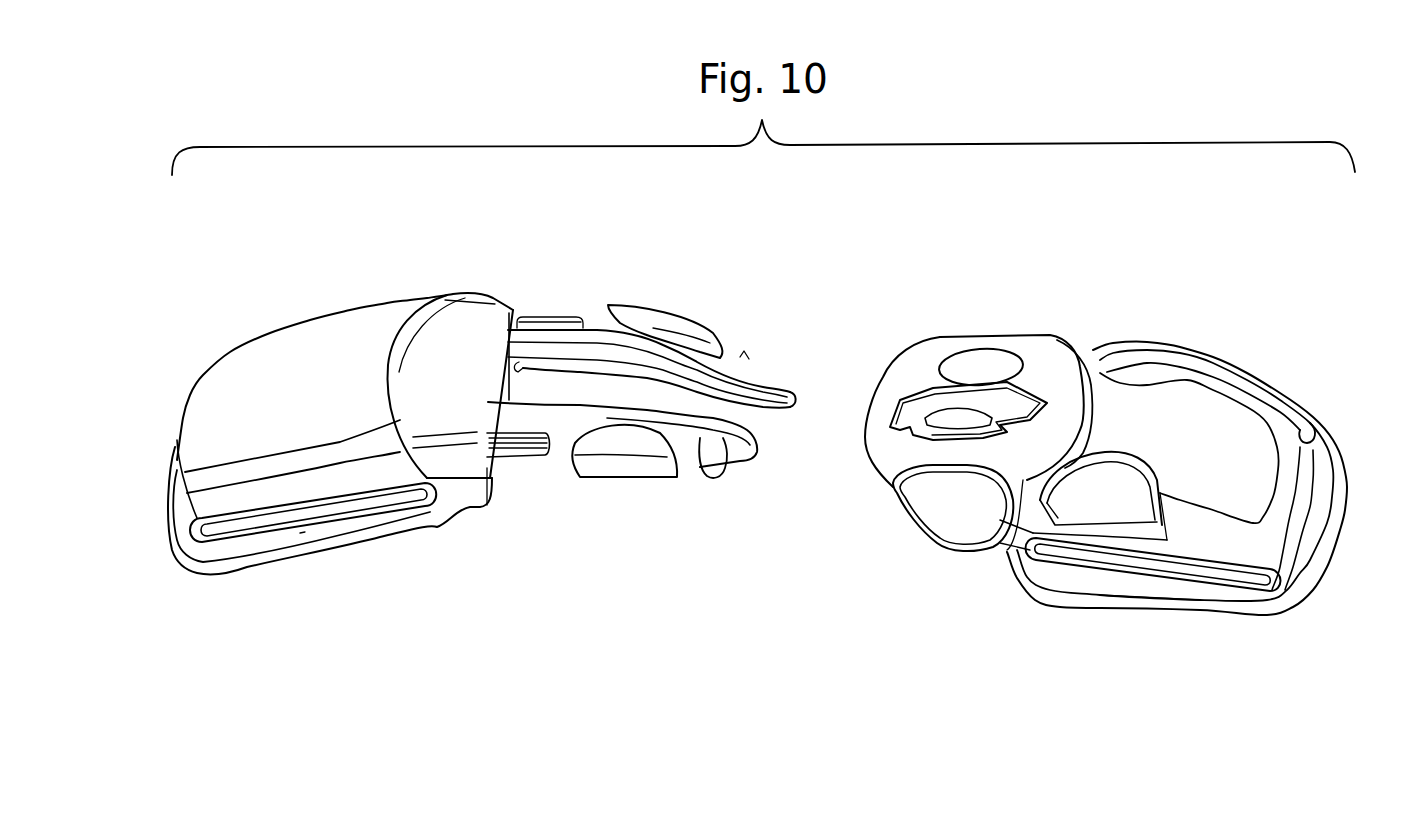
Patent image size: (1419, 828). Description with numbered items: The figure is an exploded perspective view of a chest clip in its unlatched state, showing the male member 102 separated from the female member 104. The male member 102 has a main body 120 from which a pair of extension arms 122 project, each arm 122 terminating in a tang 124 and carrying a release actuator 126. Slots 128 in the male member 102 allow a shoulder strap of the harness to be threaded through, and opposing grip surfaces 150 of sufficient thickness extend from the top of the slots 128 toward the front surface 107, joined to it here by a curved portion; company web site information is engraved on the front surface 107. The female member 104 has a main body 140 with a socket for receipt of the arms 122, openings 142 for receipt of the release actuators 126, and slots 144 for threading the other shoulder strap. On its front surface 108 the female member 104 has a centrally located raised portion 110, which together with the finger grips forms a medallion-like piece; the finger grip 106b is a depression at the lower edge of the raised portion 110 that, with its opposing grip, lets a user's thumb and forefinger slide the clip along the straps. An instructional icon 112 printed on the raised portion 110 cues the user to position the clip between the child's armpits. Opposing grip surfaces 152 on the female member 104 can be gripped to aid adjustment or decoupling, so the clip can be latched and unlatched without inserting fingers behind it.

The male member 102 is at (462, 258).
The female member 104 is at (1240, 270).
The finger grip 106b is at (948, 551).
The front surface 107 is at (326, 378).
The front surface 108 is at (1034, 459).
The raised portion 110 is at (935, 352).
The instructional icon 112 is at (900, 406).
The main body 120 is at (176, 510).
The extension arm 122 is at (596, 333).
The tang 124 is at (763, 372).
The release actuator 126 is at (665, 316).
The slot 128 is at (237, 535).
The main body 140 is at (1347, 452).
The opening 142 is at (1110, 470).
The slot 144 is at (1296, 430).
The grip surface 150 is at (347, 473).
The grip surface 152 is at (1190, 538).